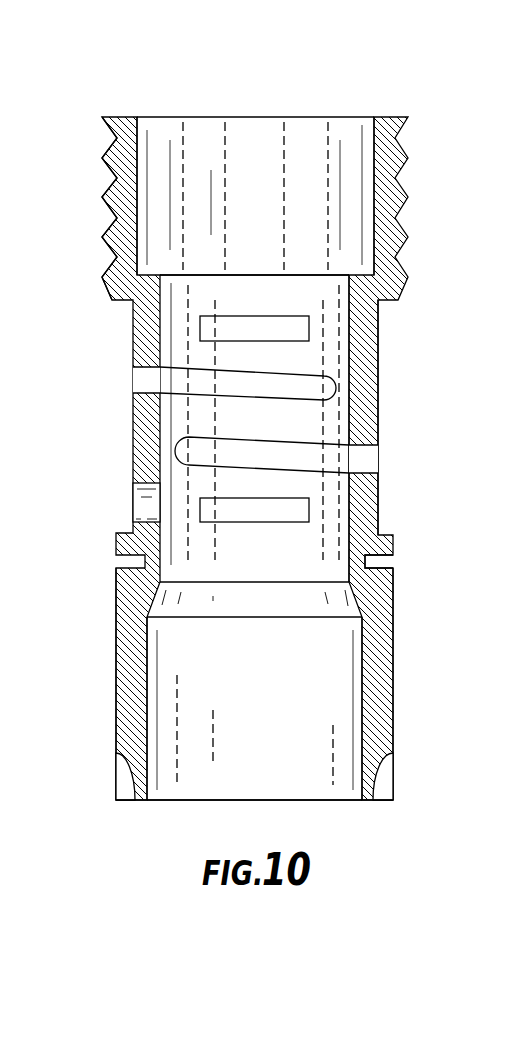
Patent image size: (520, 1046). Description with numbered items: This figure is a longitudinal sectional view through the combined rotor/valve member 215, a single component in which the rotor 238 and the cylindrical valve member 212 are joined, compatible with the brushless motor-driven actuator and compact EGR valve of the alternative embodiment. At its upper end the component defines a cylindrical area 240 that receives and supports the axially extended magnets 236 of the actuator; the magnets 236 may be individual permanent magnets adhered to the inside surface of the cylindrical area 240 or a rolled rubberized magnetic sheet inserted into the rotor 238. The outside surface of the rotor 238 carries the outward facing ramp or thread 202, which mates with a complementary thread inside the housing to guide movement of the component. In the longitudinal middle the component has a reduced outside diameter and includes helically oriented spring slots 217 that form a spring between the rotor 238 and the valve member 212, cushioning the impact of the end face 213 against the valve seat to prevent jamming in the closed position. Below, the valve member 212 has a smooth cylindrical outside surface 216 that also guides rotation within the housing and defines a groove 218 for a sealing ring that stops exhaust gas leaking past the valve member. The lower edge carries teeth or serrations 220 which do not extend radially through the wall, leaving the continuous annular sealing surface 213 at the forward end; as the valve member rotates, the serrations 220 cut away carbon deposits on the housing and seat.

The thread 202 is at (108, 255).
The rotor 238 is at (96, 176).
The magnets 236 is at (305, 143).
The cylindrical area 240 is at (272, 211).
The combined rotor/valve member 215 is at (400, 352).
The spring slots 217 is at (160, 380).
The groove 218 is at (382, 562).
The cylindrical valve member 212 is at (400, 700).
The cylindrical outside surface 216 is at (116, 670).
The teeth or serrations 220 is at (383, 785).
The end face 213 is at (369, 802).